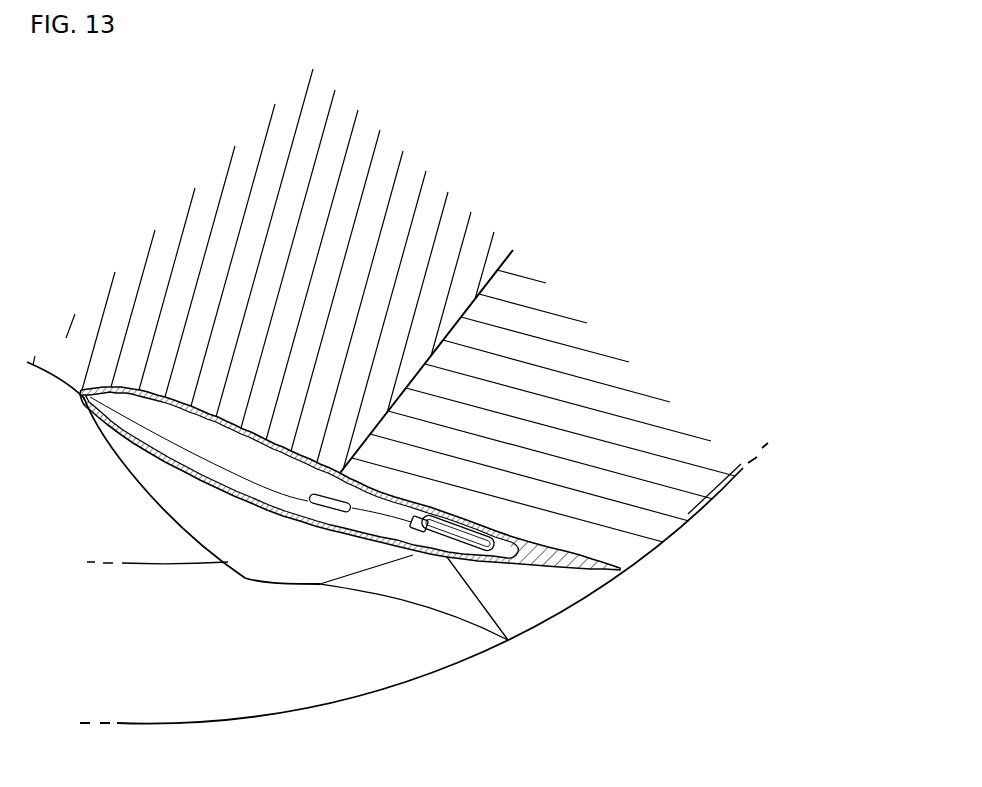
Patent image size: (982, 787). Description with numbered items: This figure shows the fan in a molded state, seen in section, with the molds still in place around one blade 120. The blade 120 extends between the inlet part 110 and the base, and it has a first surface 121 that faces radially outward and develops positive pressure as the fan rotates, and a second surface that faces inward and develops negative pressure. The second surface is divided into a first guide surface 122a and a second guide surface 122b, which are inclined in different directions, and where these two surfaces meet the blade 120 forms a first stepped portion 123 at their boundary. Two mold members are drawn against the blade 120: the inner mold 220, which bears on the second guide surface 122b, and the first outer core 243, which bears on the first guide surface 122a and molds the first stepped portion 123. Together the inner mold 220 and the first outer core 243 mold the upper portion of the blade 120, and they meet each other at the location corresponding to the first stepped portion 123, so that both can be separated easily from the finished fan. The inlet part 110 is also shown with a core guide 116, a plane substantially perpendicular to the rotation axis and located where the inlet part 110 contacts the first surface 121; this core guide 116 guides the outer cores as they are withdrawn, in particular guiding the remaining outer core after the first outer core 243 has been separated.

The inlet part 110 is at (350, 712).
The core guide 116 is at (533, 603).
The blade 120 is at (289, 600).
The first surface 121 is at (243, 550).
The first guide surface 122a is at (590, 556).
The second guide surface 122b is at (211, 416).
The first stepped portion 123 is at (340, 470).
The inner mold 220 is at (233, 207).
The first outer core 243 is at (593, 365).